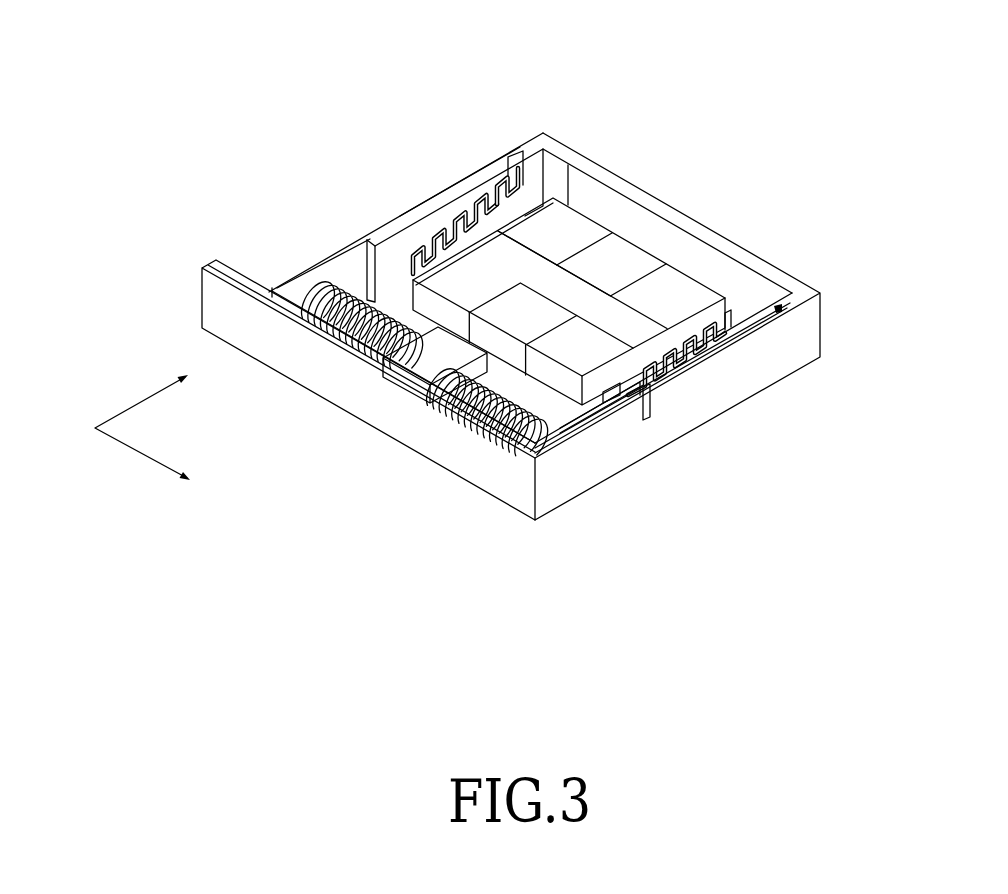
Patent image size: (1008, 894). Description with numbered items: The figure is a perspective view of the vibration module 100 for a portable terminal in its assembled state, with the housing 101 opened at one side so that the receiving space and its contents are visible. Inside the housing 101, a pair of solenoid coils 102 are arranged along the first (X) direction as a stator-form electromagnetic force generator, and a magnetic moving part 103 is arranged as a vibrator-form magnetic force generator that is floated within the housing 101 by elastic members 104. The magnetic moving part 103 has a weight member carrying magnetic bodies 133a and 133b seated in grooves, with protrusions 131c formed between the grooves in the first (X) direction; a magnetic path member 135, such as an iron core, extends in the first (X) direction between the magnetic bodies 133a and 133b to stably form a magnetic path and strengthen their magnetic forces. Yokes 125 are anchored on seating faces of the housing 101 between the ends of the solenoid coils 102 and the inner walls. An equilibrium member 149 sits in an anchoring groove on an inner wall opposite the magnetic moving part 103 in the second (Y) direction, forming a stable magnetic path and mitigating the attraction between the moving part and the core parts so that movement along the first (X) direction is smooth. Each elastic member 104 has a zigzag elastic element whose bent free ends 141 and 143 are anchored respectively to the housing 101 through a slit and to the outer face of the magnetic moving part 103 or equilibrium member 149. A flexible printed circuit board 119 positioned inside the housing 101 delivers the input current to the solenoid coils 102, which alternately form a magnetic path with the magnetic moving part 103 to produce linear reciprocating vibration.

The vibration module 100 is at (337, 38).
The housing 101 is at (366, 229).
The solenoid coil 102 is at (485, 430).
The magnetic moving part 103 is at (691, 286).
The elastic member 104 is at (470, 183).
The flexible printed circuit board 119 is at (224, 266).
The yoke 125 is at (590, 412).
The protrusion 131c is at (635, 257).
The magnetic body 133a is at (447, 273).
The magnetic body 133b is at (553, 222).
The magnetic path member 135 is at (647, 337).
The free end 141 is at (740, 353).
The free end 143 is at (572, 208).
The equilibrium member 149 is at (620, 205).